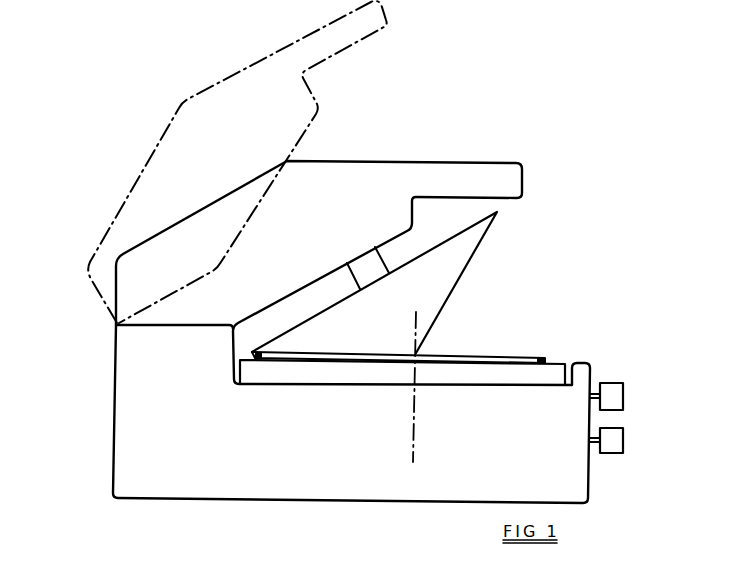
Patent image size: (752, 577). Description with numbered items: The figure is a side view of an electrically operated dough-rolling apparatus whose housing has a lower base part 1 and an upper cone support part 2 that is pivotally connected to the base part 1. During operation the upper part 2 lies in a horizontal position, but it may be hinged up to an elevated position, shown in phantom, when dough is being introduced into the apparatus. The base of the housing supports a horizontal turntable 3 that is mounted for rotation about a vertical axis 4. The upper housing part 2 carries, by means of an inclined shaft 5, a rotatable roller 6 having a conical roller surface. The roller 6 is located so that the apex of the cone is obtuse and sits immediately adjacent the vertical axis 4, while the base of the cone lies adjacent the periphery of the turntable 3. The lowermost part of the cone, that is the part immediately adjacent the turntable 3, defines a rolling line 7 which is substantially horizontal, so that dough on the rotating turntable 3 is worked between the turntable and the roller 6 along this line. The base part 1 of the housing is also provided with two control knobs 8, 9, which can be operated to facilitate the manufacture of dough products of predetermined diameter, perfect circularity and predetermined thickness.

The base part 1 is at (133, 471).
The cone support part 2 is at (132, 279).
The turntable 3 is at (552, 377).
The vertical axis 4 is at (415, 428).
The inclined shaft 5 is at (378, 259).
The roller 6 is at (465, 246).
The rolling line 7 is at (365, 350).
The control knob 8 is at (617, 397).
The control knob 9 is at (617, 445).